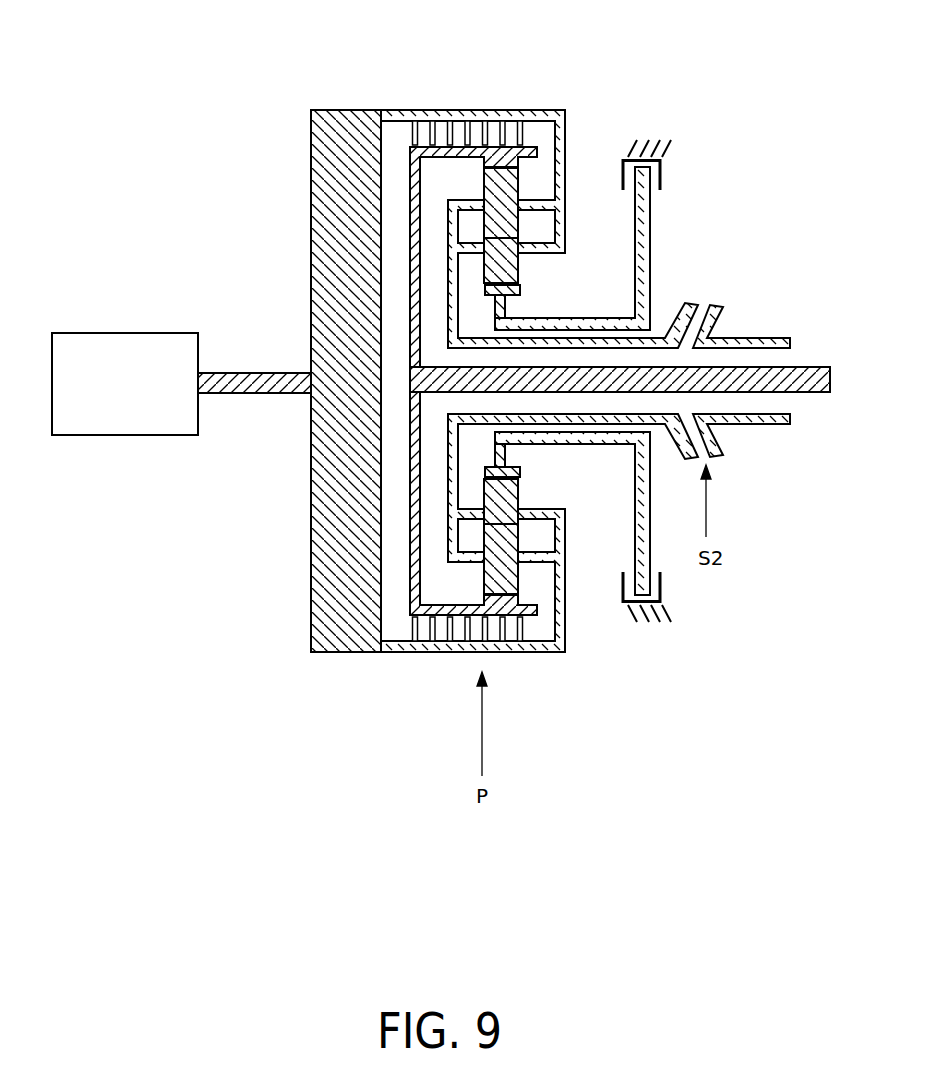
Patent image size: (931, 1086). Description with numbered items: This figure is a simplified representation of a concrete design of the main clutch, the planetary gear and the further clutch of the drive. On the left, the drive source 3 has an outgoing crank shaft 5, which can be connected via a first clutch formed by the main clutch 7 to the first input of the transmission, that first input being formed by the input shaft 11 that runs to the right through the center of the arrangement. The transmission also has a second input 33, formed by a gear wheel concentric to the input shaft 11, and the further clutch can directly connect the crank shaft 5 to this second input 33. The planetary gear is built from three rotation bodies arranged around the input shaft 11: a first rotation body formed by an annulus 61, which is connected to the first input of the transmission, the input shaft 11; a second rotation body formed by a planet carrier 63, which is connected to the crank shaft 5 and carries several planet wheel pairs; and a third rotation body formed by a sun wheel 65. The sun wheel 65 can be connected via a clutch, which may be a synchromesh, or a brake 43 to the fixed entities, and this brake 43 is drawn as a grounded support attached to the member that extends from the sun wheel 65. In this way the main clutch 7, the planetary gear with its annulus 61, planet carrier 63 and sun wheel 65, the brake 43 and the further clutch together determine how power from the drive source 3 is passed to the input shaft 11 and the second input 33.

The drive source 3 is at (128, 362).
The crank shaft 5 is at (248, 385).
The main clutch 7 is at (475, 128).
The input shaft 11 is at (815, 385).
The second input 33 is at (768, 338).
The clutch or brake 43 is at (660, 168).
The annulus 61 is at (410, 165).
The planet carrier 63 is at (453, 227).
The sun wheel 65 is at (503, 310).